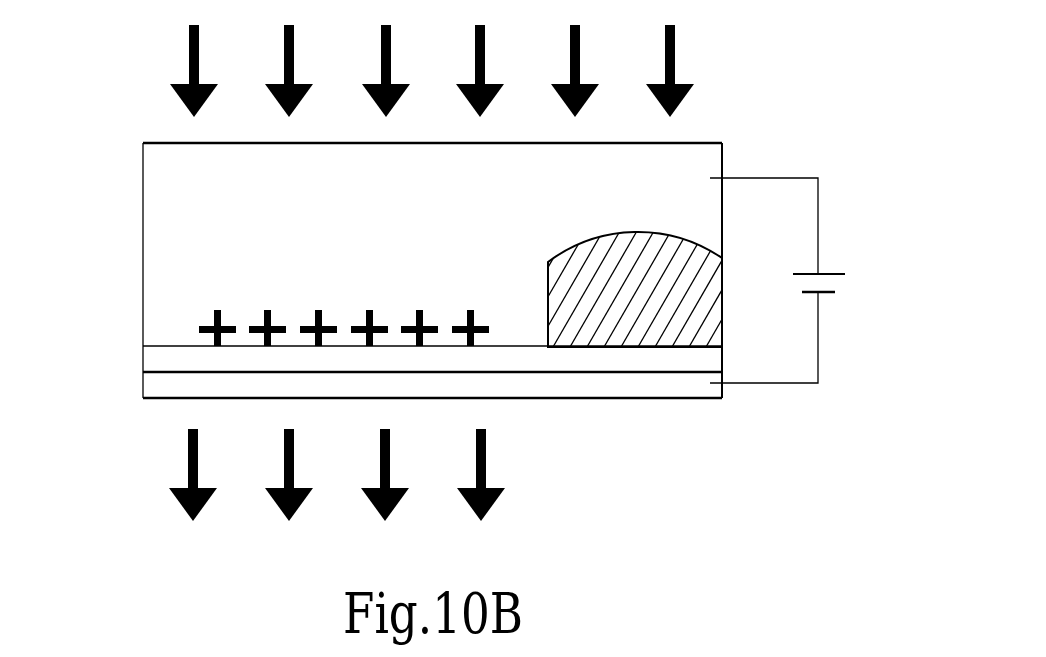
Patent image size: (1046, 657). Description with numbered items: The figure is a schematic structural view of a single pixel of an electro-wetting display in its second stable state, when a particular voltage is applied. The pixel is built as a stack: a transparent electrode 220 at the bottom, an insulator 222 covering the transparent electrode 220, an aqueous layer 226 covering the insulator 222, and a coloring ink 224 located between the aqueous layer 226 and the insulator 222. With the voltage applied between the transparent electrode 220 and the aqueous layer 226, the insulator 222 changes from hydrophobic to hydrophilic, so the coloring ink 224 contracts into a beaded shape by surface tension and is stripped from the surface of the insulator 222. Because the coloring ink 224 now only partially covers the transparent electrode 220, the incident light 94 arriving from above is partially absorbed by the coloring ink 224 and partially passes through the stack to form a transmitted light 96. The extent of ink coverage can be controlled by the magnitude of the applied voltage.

The incident light 94 is at (677, 63).
The transmitted light 96 is at (486, 459).
The transparent electrode 220 is at (157, 385).
The insulator 222 is at (157, 362).
The coloring ink 224 is at (678, 257).
The aqueous layer 226 is at (157, 197).